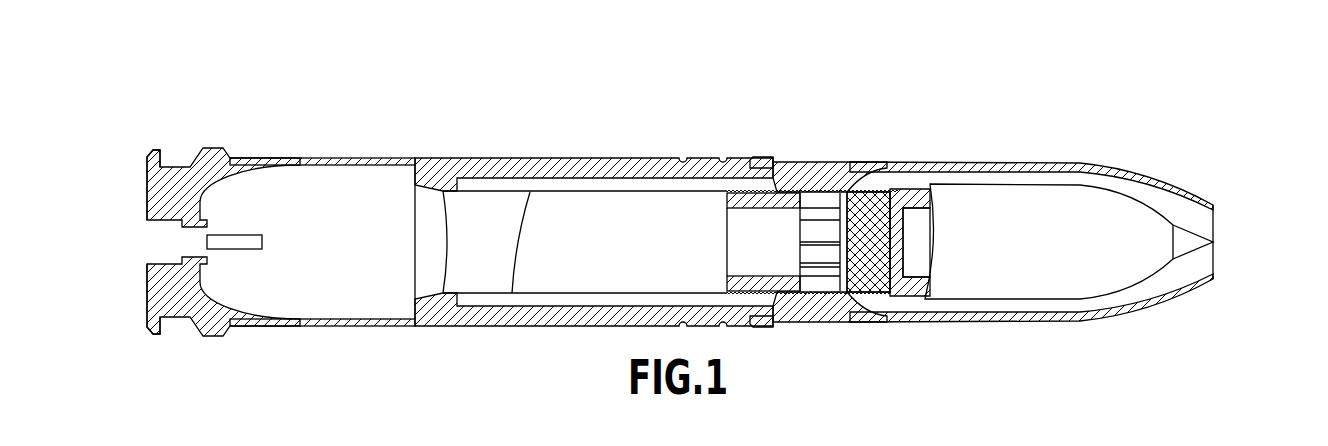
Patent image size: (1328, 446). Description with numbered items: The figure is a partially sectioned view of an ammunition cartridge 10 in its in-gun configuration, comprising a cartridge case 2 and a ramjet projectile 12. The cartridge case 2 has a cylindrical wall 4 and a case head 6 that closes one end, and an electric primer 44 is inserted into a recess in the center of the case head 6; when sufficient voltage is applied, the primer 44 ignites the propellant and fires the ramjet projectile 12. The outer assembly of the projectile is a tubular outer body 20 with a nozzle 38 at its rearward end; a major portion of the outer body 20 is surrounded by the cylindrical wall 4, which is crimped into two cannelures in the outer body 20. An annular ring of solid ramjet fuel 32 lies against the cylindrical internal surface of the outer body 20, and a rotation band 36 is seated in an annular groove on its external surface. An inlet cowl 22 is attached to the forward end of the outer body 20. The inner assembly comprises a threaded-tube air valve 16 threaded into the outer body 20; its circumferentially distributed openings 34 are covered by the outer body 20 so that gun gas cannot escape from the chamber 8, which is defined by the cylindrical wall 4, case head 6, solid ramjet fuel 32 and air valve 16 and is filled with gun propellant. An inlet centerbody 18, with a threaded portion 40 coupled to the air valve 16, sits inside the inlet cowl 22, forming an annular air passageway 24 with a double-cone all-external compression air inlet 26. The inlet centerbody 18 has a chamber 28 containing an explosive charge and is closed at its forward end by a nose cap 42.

The cartridge case 2 is at (207, 337).
The cylindrical wall 4 is at (345, 326).
The case head 6 is at (168, 202).
The chamber 8 is at (357, 251).
The ammunition cartridge 10 is at (363, 105).
The ramjet projectile 12 is at (981, 333).
The threaded-tube air valve 16 is at (797, 313).
The inlet centerbody 18 is at (923, 298).
The tubular outer body 20 is at (595, 160).
The inlet cowl 22 is at (990, 162).
The annular air passageway 24 is at (1133, 193).
The air inlet 26 is at (1240, 210).
The chamber 28 is at (918, 247).
The solid ramjet fuel 32 is at (585, 242).
The openings 34 is at (826, 200).
The rotation band 36 is at (757, 157).
The nozzle 38 is at (447, 242).
The threaded portion 40 is at (875, 292).
The nose cap 42 is at (1193, 252).
The electric primer 44 is at (247, 250).